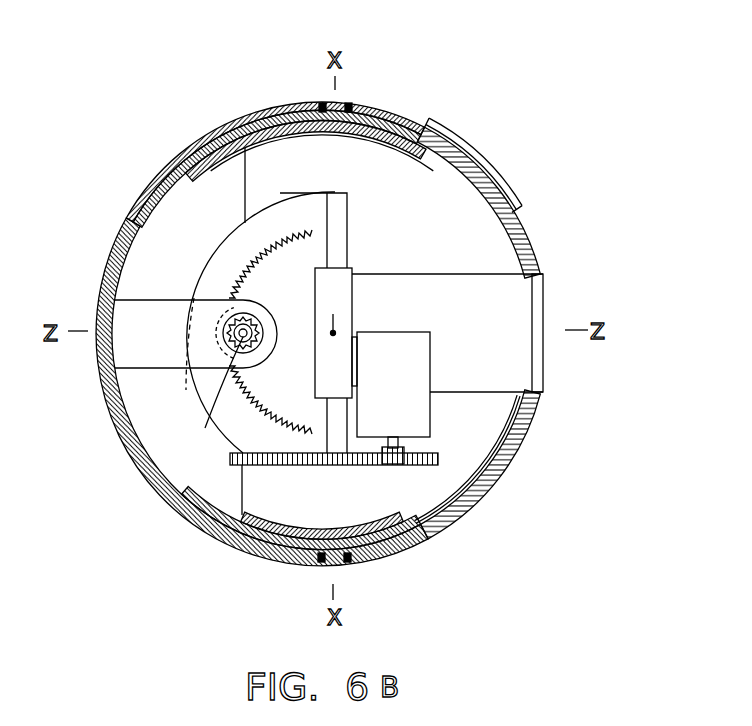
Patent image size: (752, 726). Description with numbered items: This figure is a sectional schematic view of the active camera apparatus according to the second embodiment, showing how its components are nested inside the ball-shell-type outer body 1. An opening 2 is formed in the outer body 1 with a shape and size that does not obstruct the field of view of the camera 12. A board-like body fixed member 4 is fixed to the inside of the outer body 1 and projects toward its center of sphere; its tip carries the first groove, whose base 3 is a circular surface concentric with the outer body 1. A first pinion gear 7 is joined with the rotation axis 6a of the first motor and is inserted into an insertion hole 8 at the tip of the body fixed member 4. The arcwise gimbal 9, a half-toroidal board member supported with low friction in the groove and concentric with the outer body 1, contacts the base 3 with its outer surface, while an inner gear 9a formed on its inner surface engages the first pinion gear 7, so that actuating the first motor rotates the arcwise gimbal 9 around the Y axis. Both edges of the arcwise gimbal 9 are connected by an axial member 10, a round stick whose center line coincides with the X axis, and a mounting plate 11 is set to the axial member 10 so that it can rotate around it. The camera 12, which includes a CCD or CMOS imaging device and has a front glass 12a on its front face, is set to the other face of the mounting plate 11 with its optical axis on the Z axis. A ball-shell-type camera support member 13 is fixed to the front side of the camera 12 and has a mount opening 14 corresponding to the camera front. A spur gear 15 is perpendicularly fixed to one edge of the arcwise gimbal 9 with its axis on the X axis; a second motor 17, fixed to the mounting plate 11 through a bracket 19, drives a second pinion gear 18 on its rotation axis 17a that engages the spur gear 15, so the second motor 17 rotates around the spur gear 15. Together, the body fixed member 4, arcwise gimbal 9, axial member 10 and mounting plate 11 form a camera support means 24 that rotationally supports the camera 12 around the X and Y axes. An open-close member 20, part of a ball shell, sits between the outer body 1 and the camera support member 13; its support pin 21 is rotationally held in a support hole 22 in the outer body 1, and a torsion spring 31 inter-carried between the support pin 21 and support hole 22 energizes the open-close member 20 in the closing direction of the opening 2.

The outer body 1 is at (211, 142).
The opening 2 is at (428, 127).
The base 3 is at (190, 382).
The body fixed member 4 is at (136, 303).
The rotation axis 6a is at (214, 393).
The first pinion gear 7 is at (250, 326).
The insertion hole 8 is at (252, 345).
The arcwise gimbal 9 is at (213, 273).
The inner gear 9a is at (262, 250).
The axial member 10 is at (349, 241).
The mounting plate 11 is at (342, 284).
The camera 12 is at (533, 392).
The front glass 12a is at (545, 364).
The camera support member 13 is at (528, 244).
The mount opening 14 is at (548, 275).
The spur gear 15 is at (438, 454).
The second motor 17 is at (431, 351).
The rotation axis 17a is at (393, 437).
The second pinion gear 18 is at (390, 465).
The bracket 19 is at (358, 356).
The open-close member 20 is at (492, 176).
The support pin 21 is at (331, 130).
The support hole 22 is at (322, 103).
The camera support means 24 is at (232, 215).
The torsion spring 31 is at (349, 103).